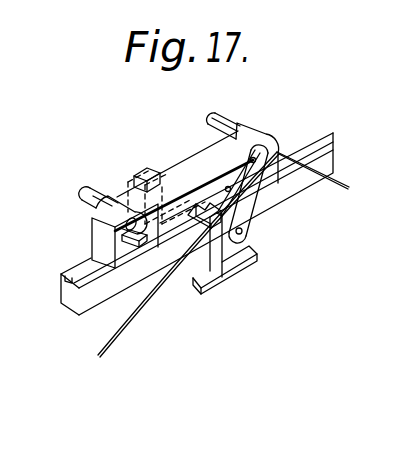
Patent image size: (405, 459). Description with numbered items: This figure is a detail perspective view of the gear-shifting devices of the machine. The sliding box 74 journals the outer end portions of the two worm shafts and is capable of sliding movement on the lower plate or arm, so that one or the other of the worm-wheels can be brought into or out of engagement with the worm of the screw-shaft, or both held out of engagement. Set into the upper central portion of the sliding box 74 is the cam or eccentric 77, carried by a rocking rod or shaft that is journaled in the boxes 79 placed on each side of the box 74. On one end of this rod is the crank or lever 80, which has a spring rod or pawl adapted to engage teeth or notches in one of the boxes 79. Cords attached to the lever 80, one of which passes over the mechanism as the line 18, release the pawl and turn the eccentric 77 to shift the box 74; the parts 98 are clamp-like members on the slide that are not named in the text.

The wire 18 is at (338, 186).
The sliding box 74 is at (93, 232).
The cam or eccentric 77 is at (183, 192).
The boxes 79 is at (160, 163).
The crank or lever 80 is at (250, 197).
The clamp screw 98 is at (103, 186).